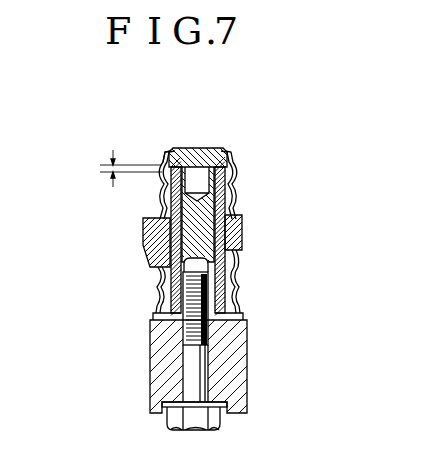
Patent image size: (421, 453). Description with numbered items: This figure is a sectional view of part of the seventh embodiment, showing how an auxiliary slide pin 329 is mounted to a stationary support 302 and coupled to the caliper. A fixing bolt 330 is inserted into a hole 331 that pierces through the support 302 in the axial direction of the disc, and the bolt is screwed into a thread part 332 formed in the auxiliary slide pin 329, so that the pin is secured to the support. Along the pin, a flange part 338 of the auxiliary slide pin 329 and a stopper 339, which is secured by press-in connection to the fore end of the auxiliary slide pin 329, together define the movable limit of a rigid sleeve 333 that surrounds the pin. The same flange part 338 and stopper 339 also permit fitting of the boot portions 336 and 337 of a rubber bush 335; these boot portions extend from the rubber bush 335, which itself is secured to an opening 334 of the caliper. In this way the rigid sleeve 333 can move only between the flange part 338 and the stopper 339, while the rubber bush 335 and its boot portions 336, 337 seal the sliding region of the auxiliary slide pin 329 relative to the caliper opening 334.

The support 302 is at (167, 367).
The auxiliary slide pin 329 is at (228, 197).
The fixing bolt 330 is at (197, 383).
The hole 331 is at (211, 341).
The thread part 332 is at (238, 283).
The rigid sleeve 333 is at (238, 170).
The opening 334 is at (163, 234).
The rubber bush 335 is at (199, 213).
The boot portion 336 is at (157, 283).
The boot portion 337 is at (162, 165).
The flange part 338 is at (221, 311).
The stopper 339 is at (204, 147).